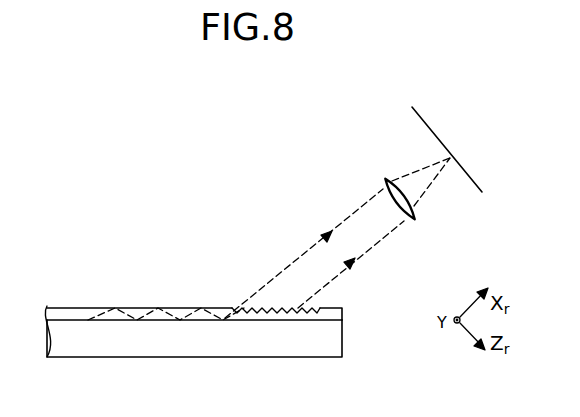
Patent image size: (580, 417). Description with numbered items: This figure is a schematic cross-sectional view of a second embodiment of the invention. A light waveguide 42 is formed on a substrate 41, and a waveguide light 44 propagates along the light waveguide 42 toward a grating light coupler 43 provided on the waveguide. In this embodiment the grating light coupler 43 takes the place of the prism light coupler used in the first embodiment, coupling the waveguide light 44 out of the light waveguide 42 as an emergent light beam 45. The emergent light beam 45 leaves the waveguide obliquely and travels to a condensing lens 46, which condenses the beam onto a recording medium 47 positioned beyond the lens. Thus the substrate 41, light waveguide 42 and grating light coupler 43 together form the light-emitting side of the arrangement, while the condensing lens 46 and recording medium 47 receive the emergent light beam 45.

The substrate 41 is at (342, 342).
The light waveguide 42 is at (342, 310).
The grating light coupler 43 is at (272, 313).
The waveguide light 44 is at (131, 313).
The emergent light beam 45 is at (327, 231).
The condensing lens 46 is at (411, 221).
The recording medium 47 is at (481, 193).